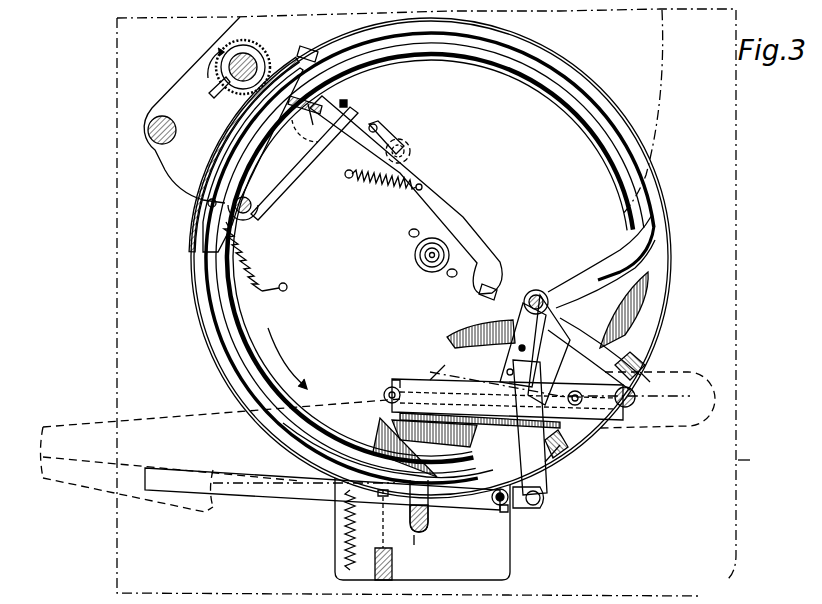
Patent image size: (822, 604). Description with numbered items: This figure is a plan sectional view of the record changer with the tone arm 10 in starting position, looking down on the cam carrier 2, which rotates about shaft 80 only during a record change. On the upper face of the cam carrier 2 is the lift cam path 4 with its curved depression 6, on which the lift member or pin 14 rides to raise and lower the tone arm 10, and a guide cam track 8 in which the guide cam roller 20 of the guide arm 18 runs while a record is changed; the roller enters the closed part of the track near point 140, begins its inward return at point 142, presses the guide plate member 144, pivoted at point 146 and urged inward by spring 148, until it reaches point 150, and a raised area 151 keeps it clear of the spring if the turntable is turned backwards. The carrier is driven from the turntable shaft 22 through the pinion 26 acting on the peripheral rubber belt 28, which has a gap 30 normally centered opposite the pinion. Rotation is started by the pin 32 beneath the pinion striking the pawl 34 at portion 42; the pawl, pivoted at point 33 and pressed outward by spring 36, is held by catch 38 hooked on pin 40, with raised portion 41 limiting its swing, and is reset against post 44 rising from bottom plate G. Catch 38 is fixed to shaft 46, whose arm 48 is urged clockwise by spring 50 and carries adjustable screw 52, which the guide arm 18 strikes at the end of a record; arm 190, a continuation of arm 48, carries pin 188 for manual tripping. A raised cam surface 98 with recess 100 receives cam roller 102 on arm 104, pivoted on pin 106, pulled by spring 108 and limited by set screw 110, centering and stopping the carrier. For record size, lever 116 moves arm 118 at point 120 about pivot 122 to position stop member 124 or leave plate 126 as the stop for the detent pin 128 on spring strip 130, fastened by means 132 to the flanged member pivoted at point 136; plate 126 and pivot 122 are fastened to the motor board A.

The cam carrier 2 is at (430, 258).
The cam path 4 is at (669, 198).
The curved depression 6 is at (640, 372).
The guide cam track 8 is at (543, 70).
The tone arm 10 is at (642, 428).
The lift member or pin 14 is at (636, 397).
The guide arm 18 is at (507, 399).
The guide cam roller 20 is at (390, 388).
The turntable shaft 22 is at (243, 52).
The pinion or driving means 26 is at (262, 62).
The peripheral driving means 28 is at (310, 56).
The gap 30 is at (258, 97).
The pin or projecting member 32 is at (212, 93).
The pivot point 33 is at (255, 206).
The pawl 34 is at (297, 140).
The spring 36 is at (250, 232).
The catch 38 is at (355, 90).
The pin 40 is at (350, 104).
The raised portion 41 is at (306, 110).
The engagement point of pawl 42 is at (308, 98).
The re-setting pin or post 44 is at (207, 204).
The shaft 46 is at (410, 146).
The arm 48 is at (470, 222).
The spring 50 is at (388, 184).
The adjustable screw 52 is at (480, 296).
The shaft 80 is at (422, 264).
The cam surface 98 is at (520, 508).
The recessed portion 100 is at (494, 504).
The cam roller 102 is at (503, 512).
The arm 104 is at (422, 528).
The pin 106 is at (414, 545).
The spring 108 is at (340, 537).
The set screw 110 is at (393, 570).
The lever 116 is at (232, 490).
The arm 118 is at (548, 473).
The connection point 120 is at (541, 500).
The pivot 122 is at (540, 291).
The projecting stop member 124 is at (505, 360).
The plate 126 is at (512, 332).
The pin or detent 128 is at (440, 425).
The strip of spring metal 130 is at (590, 372).
The screw, rivet or fastening means 132 is at (640, 365).
The pivot point 136 is at (392, 382).
The point 140 is at (306, 127).
The point 142 is at (640, 246).
The guide plate member 144 is at (565, 350).
The pivot point 146 is at (645, 322).
The spring 148 is at (480, 455).
The point 150 is at (445, 365).
The raised area 151 is at (340, 452).
The pin 188 is at (376, 125).
The arm 190 is at (392, 128).
The motor board A is at (757, 460).
The bottom plate G is at (160, 165).